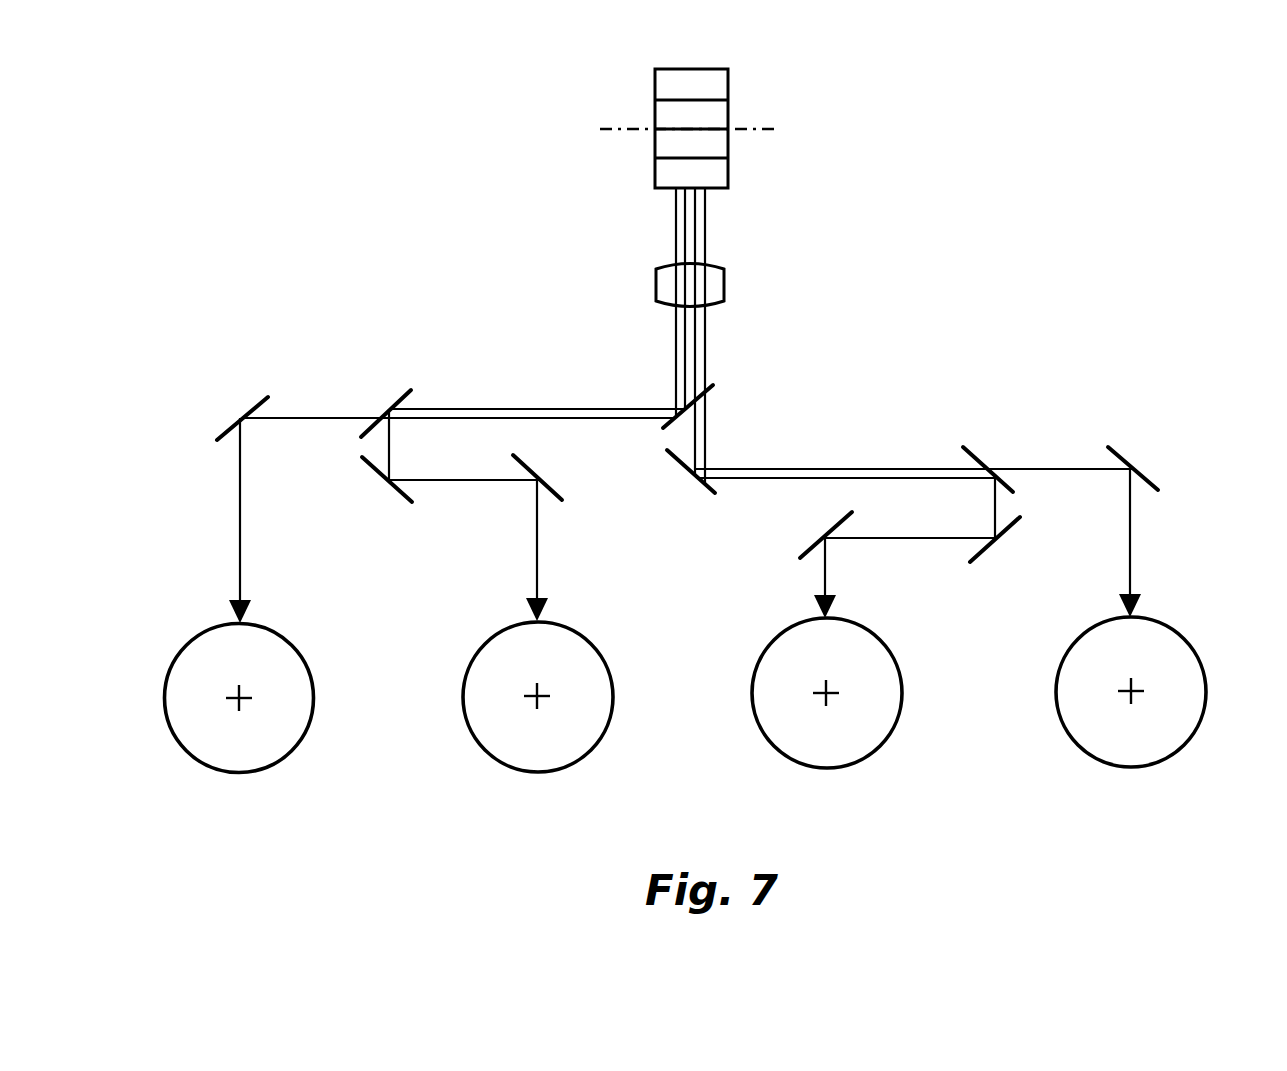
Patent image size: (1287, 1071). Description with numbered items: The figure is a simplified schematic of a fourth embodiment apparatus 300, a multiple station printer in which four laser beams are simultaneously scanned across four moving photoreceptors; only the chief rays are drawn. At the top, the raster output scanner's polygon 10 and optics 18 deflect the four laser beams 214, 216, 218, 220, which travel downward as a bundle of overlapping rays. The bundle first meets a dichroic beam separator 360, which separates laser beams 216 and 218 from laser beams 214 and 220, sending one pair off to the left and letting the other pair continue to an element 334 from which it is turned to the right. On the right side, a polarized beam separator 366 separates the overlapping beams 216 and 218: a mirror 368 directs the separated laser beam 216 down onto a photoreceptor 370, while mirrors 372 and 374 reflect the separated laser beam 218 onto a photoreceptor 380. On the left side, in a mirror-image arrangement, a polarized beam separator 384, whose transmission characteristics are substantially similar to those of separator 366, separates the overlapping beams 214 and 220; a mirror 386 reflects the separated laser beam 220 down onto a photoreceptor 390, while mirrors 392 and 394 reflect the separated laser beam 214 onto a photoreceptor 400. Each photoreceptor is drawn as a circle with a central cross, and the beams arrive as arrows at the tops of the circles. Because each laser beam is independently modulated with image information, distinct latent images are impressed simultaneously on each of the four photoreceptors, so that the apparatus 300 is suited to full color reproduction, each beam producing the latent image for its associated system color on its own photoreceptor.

The polygon 10 is at (690, 84).
The optics 18 is at (717, 283).
The laser beam 214 is at (688, 350).
The laser beam 216 is at (695, 372).
The laser beam 218 is at (704, 342).
The laser beam 220 is at (675, 400).
The apparatus 300 is at (1048, 102).
The beam splitter 334 is at (698, 481).
The dichroic beam separator 360 is at (711, 390).
The polarized beam separator 366 is at (972, 452).
The mirror 368 is at (1151, 479).
The photoreceptor 370 is at (1190, 692).
The mirror 372 is at (1006, 528).
The mirror 374 is at (817, 539).
The photoreceptor 380 is at (885, 695).
The polarized beam separator 384 is at (405, 393).
The mirror 386 is at (258, 398).
The photoreceptor 390 is at (297, 700).
The mirror 392 is at (392, 486).
The mirror 394 is at (546, 482).
The photoreceptor 400 is at (595, 695).